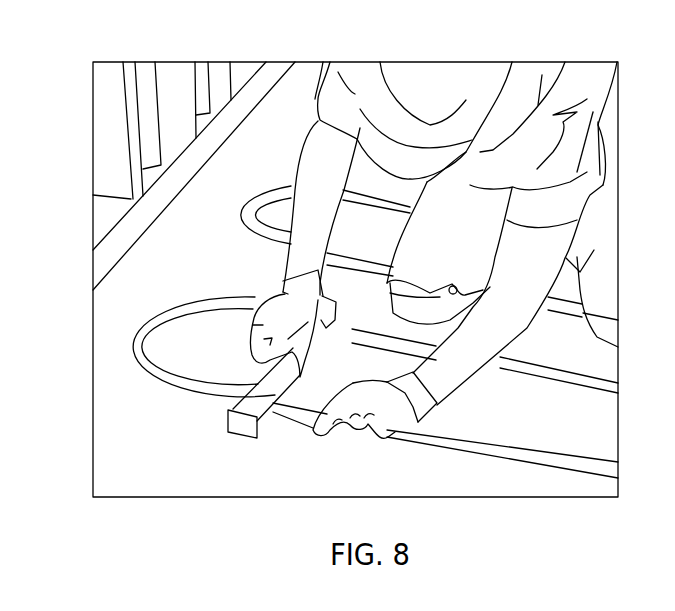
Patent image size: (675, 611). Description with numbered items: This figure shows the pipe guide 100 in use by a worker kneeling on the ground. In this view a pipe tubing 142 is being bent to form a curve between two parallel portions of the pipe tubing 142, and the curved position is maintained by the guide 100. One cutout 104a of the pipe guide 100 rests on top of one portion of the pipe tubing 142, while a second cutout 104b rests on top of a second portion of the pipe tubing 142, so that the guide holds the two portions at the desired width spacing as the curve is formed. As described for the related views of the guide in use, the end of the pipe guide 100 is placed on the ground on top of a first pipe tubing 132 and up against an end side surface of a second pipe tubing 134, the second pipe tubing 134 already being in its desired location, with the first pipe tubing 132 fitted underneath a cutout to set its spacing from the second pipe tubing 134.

The pipe guide 100 is at (228, 408).
The cutout 104a is at (205, 364).
The second cutout 104b is at (283, 293).
The first pipe tubing 132 is at (273, 413).
The second pipe tubing 134 is at (326, 322).
The pipe tubing 142 is at (135, 345).